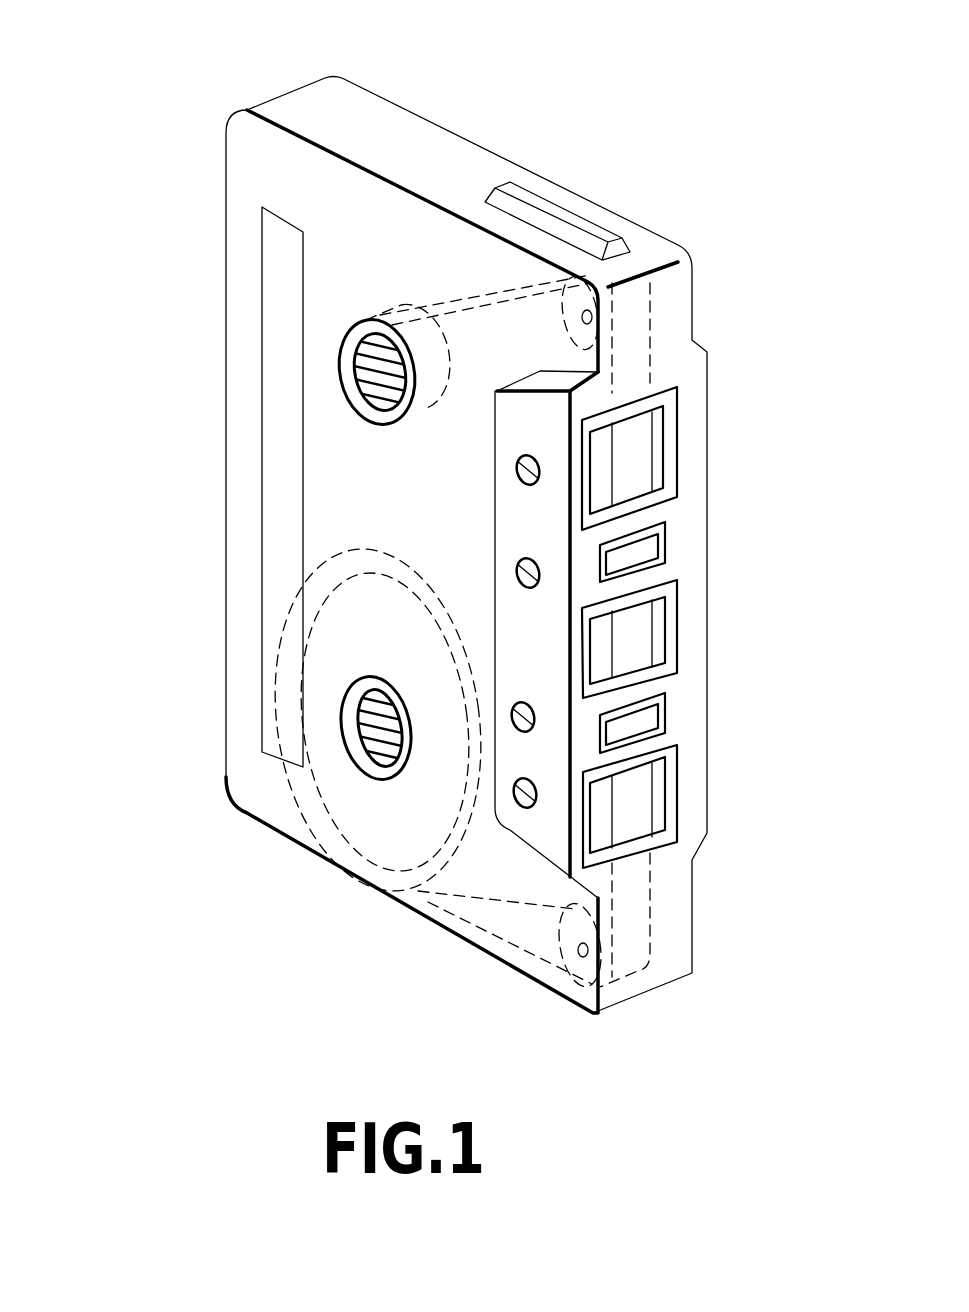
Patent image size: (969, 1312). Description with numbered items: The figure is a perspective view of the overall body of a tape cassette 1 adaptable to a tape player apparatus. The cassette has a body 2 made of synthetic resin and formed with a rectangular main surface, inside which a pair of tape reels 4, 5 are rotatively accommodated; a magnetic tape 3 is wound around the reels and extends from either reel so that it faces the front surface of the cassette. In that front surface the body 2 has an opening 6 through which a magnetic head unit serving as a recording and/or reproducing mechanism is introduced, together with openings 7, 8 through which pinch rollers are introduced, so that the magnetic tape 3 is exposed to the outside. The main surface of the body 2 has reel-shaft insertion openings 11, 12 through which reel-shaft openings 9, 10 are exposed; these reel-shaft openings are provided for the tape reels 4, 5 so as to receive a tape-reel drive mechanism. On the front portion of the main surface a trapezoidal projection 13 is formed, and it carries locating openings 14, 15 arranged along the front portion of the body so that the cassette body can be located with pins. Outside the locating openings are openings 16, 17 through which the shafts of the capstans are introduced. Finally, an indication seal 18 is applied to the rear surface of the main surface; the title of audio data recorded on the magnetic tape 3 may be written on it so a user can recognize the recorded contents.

The tape cassette 1 is at (570, 107).
The body 2 is at (243, 218).
The magnetic tape 3 is at (627, 432).
The tape reel 4 is at (355, 335).
The tape reel 5 is at (360, 680).
The opening 6 is at (660, 666).
The opening 7 is at (660, 495).
The opening 8 is at (658, 835).
The reel-shaft opening 9 is at (365, 388).
The reel-shaft opening 10 is at (365, 747).
The reel-shaft insertion opening 11 is at (387, 337).
The reel-shaft insertion opening 12 is at (398, 698).
The trapezoidal projection 13 is at (505, 493).
The locating opening 14 is at (530, 572).
The locating opening 15 is at (532, 717).
The opening 16 is at (530, 453).
The opening 17 is at (538, 797).
The indication seal 18 is at (287, 250).